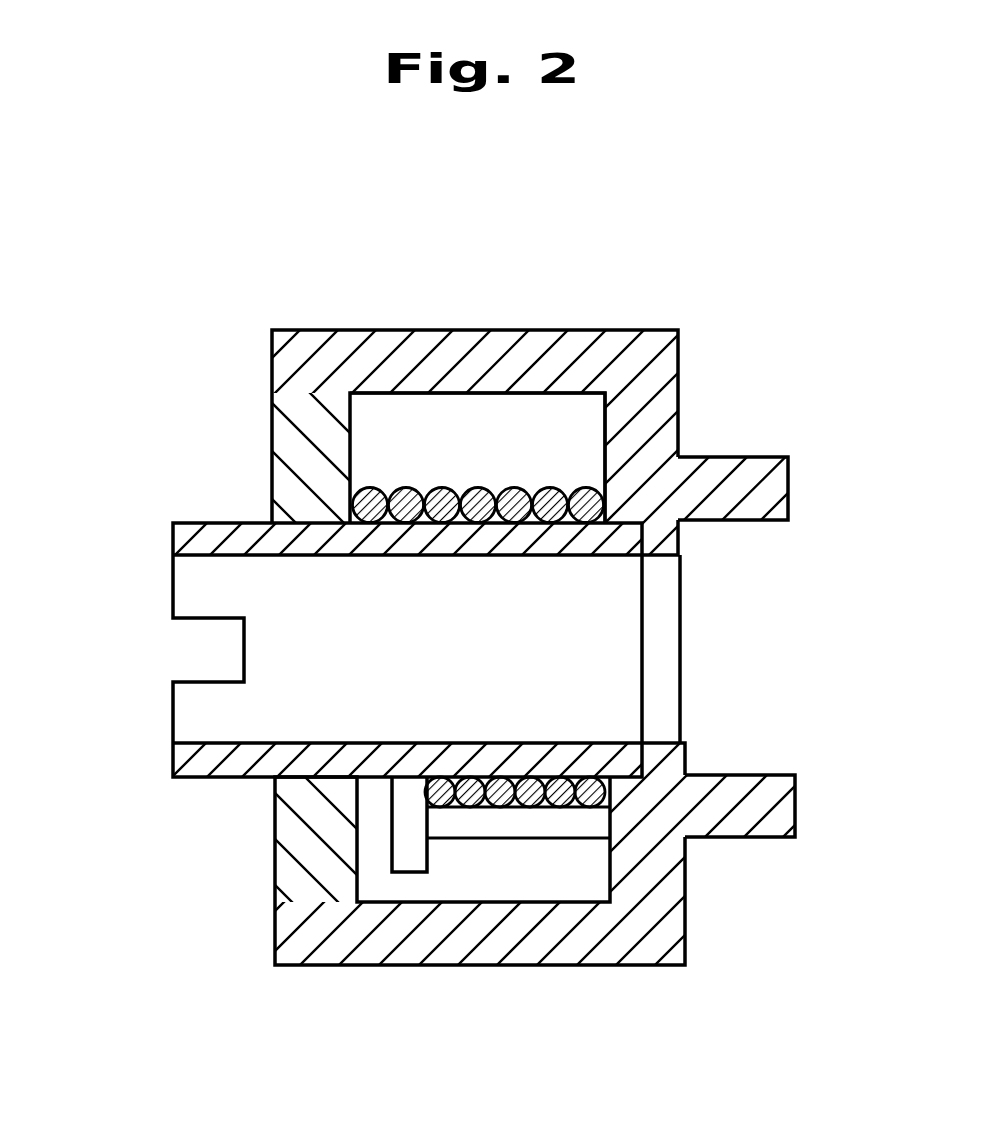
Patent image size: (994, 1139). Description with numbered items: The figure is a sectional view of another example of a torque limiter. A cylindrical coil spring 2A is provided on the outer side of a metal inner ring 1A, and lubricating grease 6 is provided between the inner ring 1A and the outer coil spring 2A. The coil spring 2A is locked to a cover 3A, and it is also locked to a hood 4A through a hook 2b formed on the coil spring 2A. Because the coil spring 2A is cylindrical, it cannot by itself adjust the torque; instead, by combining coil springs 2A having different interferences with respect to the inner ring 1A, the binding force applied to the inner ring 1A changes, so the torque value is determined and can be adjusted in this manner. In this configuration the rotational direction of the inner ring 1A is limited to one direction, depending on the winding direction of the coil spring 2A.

The inner ring 1A is at (207, 755).
The cylindrical coil spring 2A is at (492, 802).
The hook 2b is at (405, 827).
The cover 3A is at (308, 833).
The hood 4A is at (640, 838).
The lubricating grease 6 is at (507, 438).